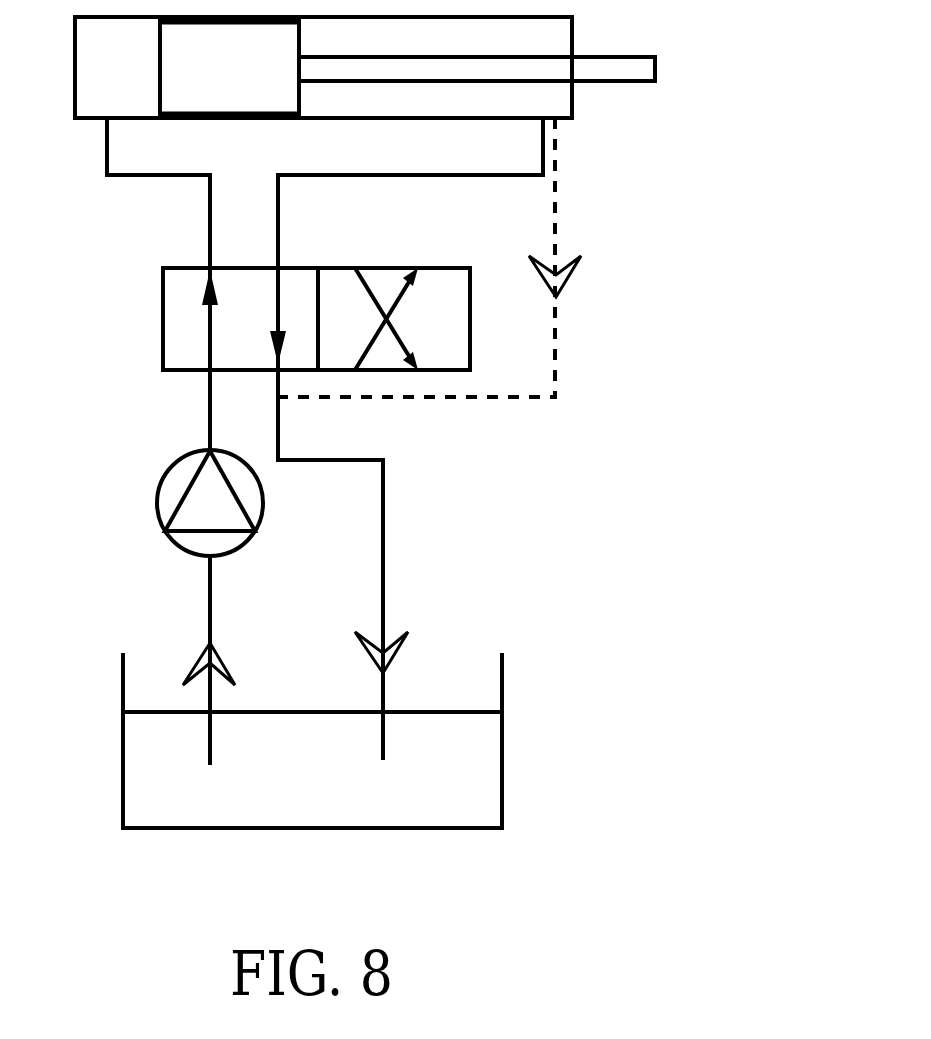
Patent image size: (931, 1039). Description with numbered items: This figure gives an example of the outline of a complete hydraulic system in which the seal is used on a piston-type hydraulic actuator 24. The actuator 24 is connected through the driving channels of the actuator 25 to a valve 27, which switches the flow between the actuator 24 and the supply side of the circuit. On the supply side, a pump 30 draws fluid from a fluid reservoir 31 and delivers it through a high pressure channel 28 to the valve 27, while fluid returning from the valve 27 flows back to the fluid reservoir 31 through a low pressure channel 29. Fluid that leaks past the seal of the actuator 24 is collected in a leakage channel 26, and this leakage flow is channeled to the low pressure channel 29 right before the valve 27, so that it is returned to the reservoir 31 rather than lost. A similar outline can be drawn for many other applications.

The piston-type hydraulic actuator 24 is at (663, 67).
The driving channels of the actuator 25 is at (220, 214).
The leakage channel 26 is at (566, 232).
The valve 27 is at (481, 318).
The high pressure channel 28 is at (222, 408).
The low pressure channel 29 is at (394, 516).
The pump 30 is at (262, 545).
The fluid reservoir 31 is at (446, 758).